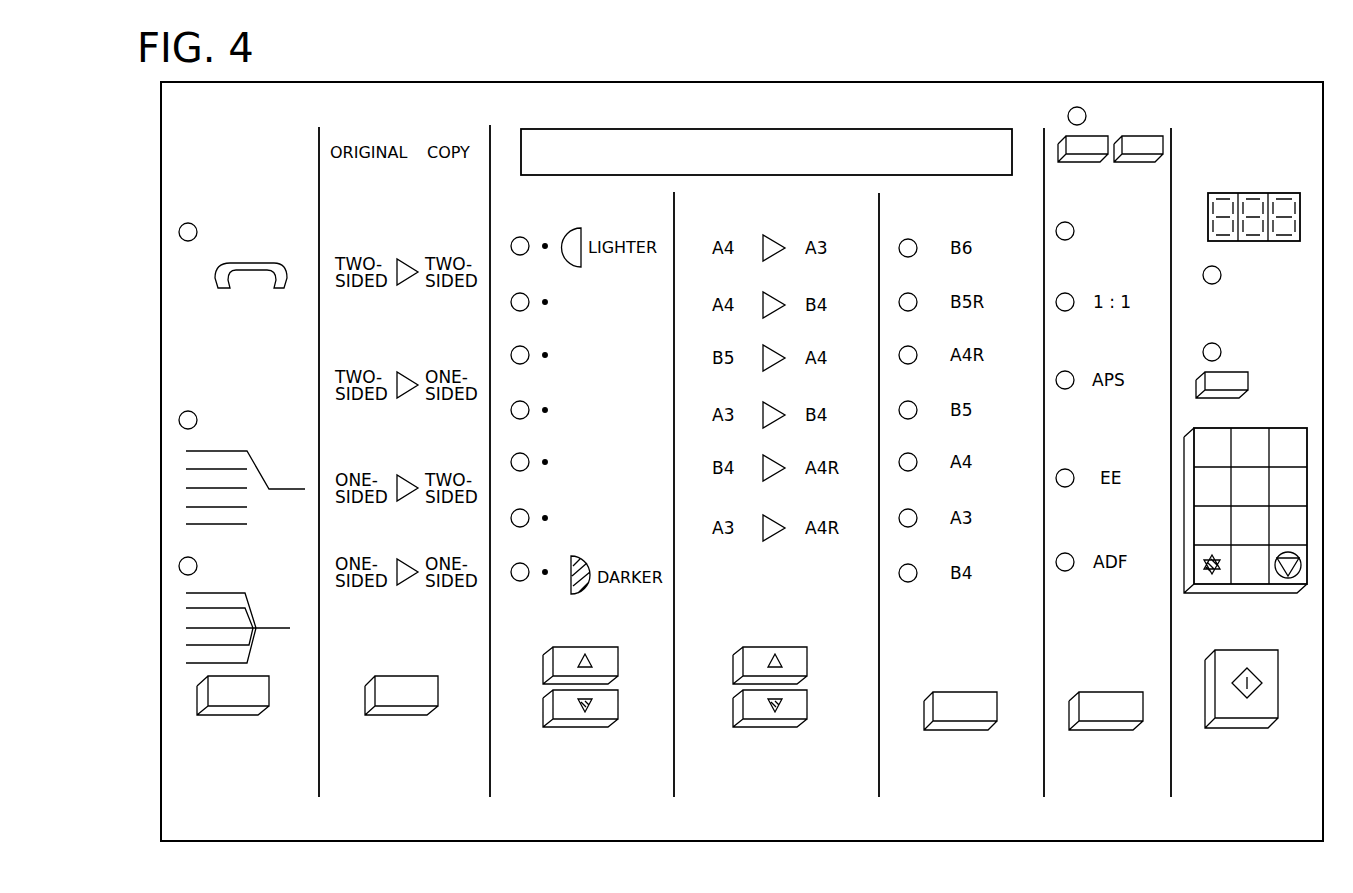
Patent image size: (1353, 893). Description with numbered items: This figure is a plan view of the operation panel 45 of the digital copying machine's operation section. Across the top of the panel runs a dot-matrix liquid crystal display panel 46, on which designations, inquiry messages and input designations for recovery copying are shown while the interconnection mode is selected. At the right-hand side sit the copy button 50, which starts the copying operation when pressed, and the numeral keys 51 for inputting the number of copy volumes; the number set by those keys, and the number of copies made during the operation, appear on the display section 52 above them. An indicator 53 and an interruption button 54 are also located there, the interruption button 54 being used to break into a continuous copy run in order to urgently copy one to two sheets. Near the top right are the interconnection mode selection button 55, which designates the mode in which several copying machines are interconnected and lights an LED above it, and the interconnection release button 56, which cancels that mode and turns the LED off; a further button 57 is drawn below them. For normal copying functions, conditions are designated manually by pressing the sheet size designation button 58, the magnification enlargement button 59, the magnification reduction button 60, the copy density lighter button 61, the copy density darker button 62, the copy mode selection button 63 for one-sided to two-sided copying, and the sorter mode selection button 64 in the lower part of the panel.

The operation panel 45 is at (710, 82).
The liquid crystal display panel 46 is at (830, 129).
The copy button 50 is at (1226, 711).
The numeral keys 51 is at (1241, 578).
The display section 52 is at (1257, 193).
The indicator lamp 53 is at (1222, 275).
The interruption button 54 is at (1238, 378).
The interconnection mode selection button 55 is at (1102, 138).
The interconnection release button 56 is at (1142, 143).
The mode selection key 57 is at (1098, 713).
The sheet size designation button 58 is at (960, 713).
The magnification enlargement button 59 is at (735, 661).
The magnification reduction button 60 is at (735, 707).
The copy density (lighter) button 61 is at (545, 661).
The copy density (darker) button 62 is at (545, 707).
The copy mode (one-sided to two-sided) selection button 63 is at (400, 697).
The sorter mode selection button 64 is at (228, 697).